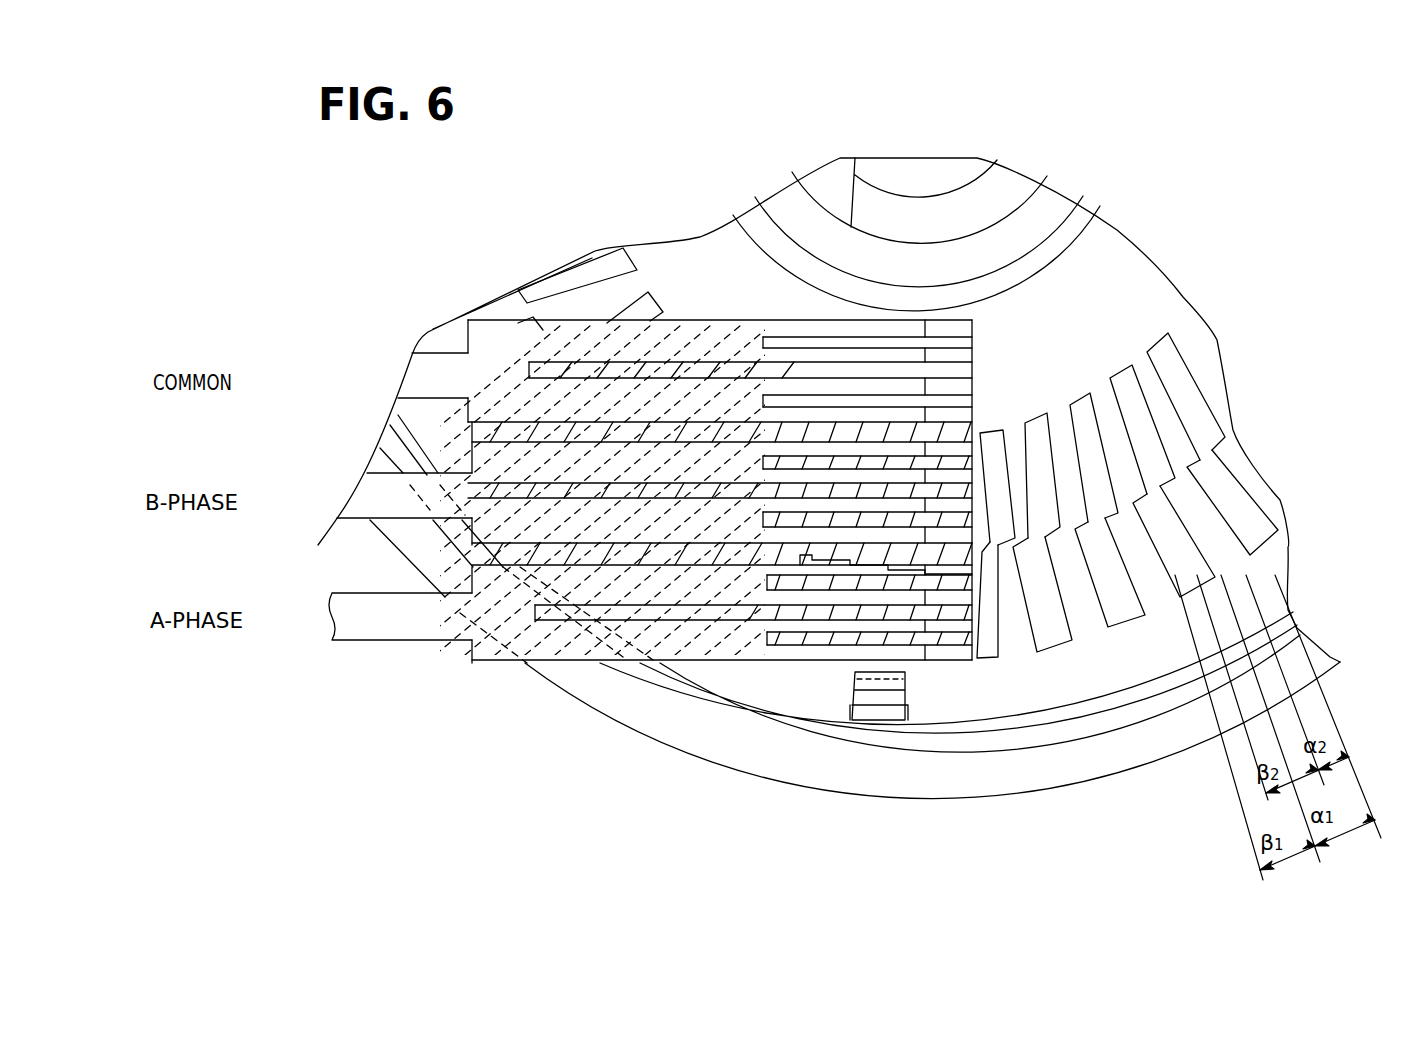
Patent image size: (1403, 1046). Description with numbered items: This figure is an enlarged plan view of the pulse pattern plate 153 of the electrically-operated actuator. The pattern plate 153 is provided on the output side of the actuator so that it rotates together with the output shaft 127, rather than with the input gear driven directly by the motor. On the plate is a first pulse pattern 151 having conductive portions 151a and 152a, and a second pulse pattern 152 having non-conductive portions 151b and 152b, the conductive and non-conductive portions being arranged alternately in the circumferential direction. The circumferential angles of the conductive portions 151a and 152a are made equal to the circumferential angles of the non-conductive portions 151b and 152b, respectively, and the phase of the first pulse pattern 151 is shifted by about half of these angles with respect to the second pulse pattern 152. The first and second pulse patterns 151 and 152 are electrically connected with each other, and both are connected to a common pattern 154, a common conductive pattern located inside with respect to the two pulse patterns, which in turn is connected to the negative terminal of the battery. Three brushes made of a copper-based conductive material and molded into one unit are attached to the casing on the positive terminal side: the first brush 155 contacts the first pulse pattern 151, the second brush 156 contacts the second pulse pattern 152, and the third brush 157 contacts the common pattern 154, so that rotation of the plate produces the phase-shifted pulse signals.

The output shaft 127 is at (917, 178).
The first pulse pattern 151 is at (1176, 654).
The conductive portion 151a is at (1047, 632).
The non-conductive portion 151b is at (1083, 607).
The second pulse pattern 152 is at (1094, 532).
The conductive portion 152a is at (1033, 512).
The non-conductive portion 152b is at (1062, 498).
The pulse pattern plate 153 is at (947, 670).
The common pattern 154 is at (1150, 298).
The first brush 155 is at (410, 625).
The second brush 156 is at (345, 512).
The third brush 157 is at (420, 375).